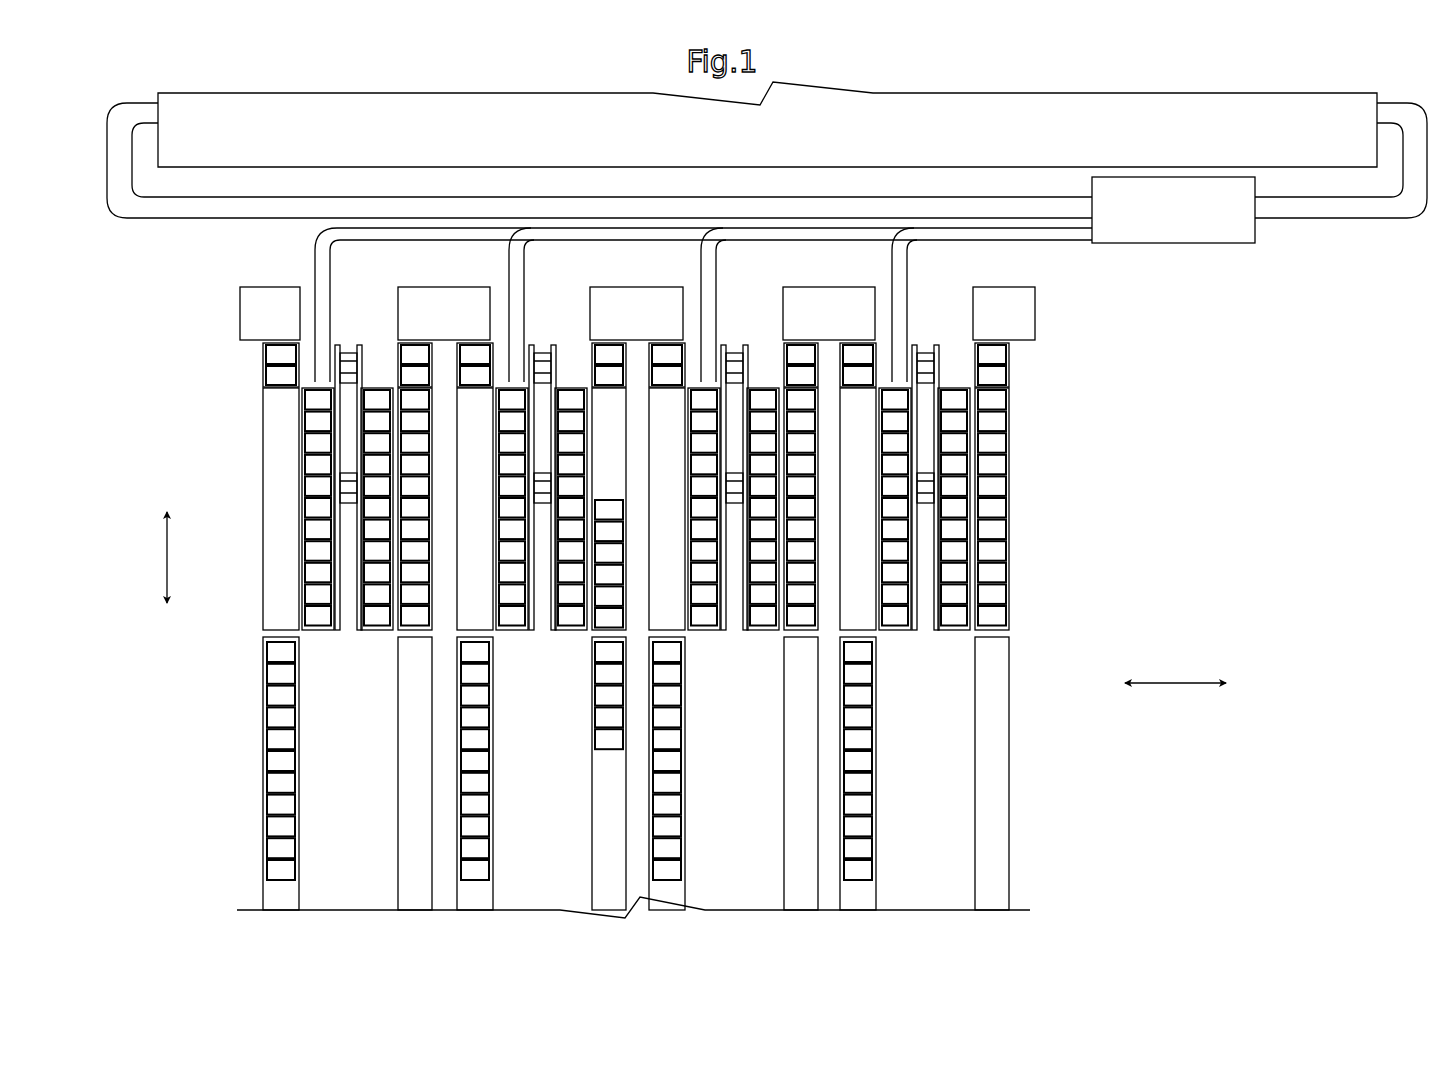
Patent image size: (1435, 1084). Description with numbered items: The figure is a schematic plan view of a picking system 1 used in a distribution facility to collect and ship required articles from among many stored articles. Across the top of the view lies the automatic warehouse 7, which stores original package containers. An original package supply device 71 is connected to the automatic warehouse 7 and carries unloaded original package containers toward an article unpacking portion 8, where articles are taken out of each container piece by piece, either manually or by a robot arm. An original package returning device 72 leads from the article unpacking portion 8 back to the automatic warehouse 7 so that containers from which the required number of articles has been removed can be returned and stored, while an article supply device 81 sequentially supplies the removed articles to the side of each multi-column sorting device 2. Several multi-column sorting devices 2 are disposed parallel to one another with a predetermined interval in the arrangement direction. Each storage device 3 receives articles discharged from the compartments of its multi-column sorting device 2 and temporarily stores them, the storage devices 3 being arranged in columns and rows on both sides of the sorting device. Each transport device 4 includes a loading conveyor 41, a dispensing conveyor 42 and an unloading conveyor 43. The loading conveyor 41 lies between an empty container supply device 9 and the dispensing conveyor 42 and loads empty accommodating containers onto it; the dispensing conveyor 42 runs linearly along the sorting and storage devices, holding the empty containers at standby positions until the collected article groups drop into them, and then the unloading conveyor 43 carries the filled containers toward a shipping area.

The picking system 1 is at (1195, 537).
The multi-column sorting device 2 is at (348, 637).
The storage device 3 is at (636, 551).
The transport device 4 is at (287, 915).
The automatic warehouse 7 is at (215, 170).
The article unpacking portion 8 is at (1198, 243).
The empty container supply device 9 is at (262, 287).
The loading conveyor 41 is at (1010, 362).
The dispensing conveyor 42 is at (1010, 543).
The unloading conveyor 43 is at (295, 818).
The original package supply device 71 is at (1325, 218).
The original package returning device 72 is at (227, 220).
The article supply device 81 is at (1012, 243).